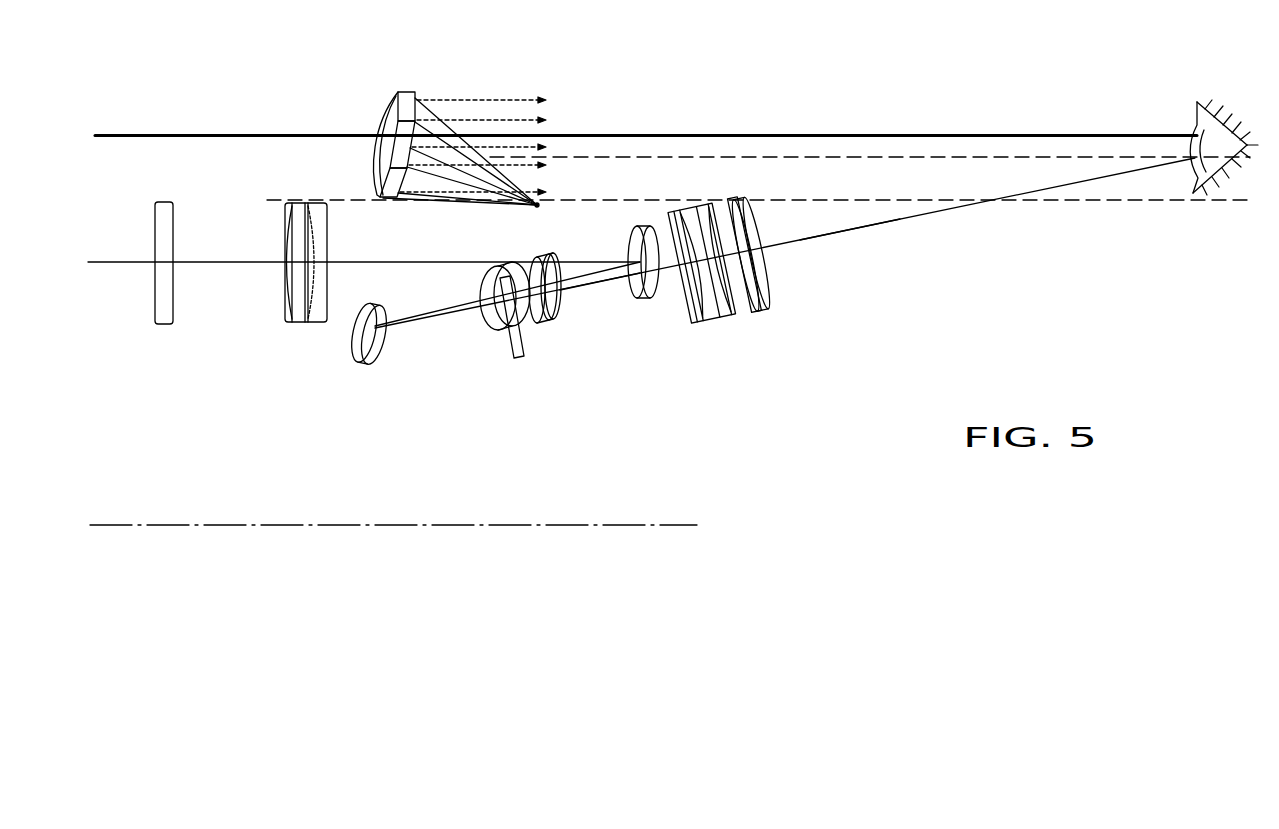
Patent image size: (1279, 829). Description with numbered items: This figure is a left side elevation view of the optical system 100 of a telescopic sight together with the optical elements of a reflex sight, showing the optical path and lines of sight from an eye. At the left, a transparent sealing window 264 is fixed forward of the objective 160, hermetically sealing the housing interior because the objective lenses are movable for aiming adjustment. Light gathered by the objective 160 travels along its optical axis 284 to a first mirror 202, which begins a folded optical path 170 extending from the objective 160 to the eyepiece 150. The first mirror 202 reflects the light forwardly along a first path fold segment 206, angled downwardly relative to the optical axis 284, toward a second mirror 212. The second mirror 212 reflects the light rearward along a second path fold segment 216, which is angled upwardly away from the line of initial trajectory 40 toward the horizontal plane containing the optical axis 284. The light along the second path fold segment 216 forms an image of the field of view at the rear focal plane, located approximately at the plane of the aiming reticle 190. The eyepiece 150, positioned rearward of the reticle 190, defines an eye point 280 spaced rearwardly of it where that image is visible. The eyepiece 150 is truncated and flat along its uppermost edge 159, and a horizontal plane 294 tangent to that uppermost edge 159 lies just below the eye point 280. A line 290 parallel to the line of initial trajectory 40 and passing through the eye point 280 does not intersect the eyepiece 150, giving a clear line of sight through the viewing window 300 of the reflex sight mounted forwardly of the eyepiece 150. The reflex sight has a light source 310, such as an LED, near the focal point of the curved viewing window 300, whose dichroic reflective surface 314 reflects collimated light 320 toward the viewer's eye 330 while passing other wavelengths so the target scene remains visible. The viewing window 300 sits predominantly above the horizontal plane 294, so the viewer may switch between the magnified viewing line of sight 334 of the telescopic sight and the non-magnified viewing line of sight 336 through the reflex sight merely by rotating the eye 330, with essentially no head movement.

The line of initial trajectory 40 is at (433, 526).
The optical system 100 is at (705, 438).
The eyepiece 150 is at (757, 219).
The uppermost edge 159 is at (755, 170).
The objective 160 is at (301, 338).
The folded optical path 170 is at (447, 318).
The aiming reticle 190 is at (523, 358).
The first mirror 202 is at (645, 294).
The first path fold segment 206 is at (597, 278).
The second mirror 212 is at (378, 364).
The second path fold segment 216 is at (583, 288).
The transparent sealing window 264 is at (162, 327).
The eye point 280 is at (1188, 176).
The optical axis 284 is at (220, 258).
The line 290 is at (980, 156).
The horizontal plane 294 is at (878, 198).
The viewing window 300 is at (407, 108).
The light source 310 is at (518, 216).
The dichroic reflective surface 314 is at (415, 97).
The collimated light 320 is at (500, 120).
The viewer's eye 330 is at (1195, 153).
The viewing line of sight 334 is at (847, 233).
The non-magnified viewing line of sight 336 is at (1073, 133).